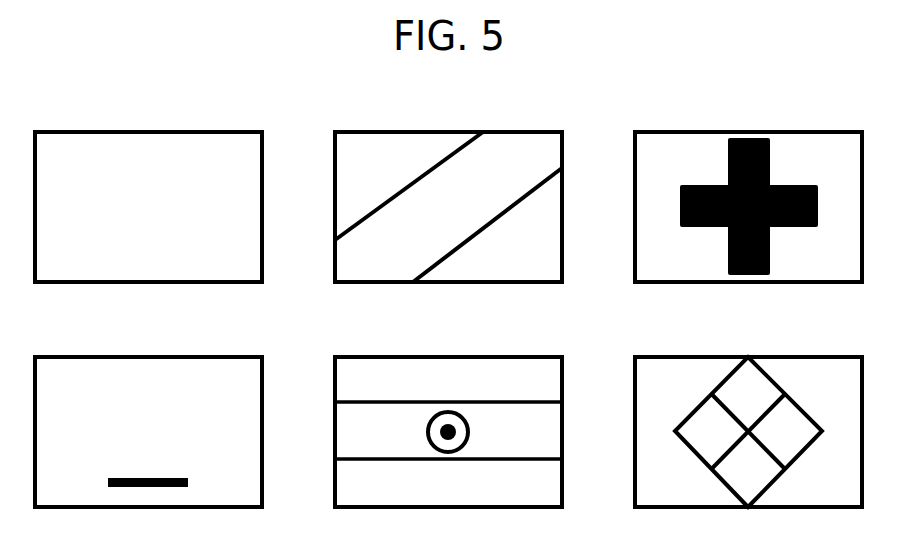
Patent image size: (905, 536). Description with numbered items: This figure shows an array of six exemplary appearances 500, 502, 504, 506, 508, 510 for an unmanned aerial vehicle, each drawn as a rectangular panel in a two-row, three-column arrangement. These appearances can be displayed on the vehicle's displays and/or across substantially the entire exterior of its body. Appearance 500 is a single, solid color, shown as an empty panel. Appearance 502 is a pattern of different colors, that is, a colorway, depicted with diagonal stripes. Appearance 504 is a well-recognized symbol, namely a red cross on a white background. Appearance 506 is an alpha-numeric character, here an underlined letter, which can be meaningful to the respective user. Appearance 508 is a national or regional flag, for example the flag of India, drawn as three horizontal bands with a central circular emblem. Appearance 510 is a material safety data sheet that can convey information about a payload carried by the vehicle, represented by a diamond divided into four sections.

The appearance 500 is at (150, 130).
The appearance 502 is at (450, 130).
The appearance 504 is at (750, 130).
The appearance 506 is at (150, 355).
The appearance 508 is at (450, 355).
The appearance 510 is at (750, 355).